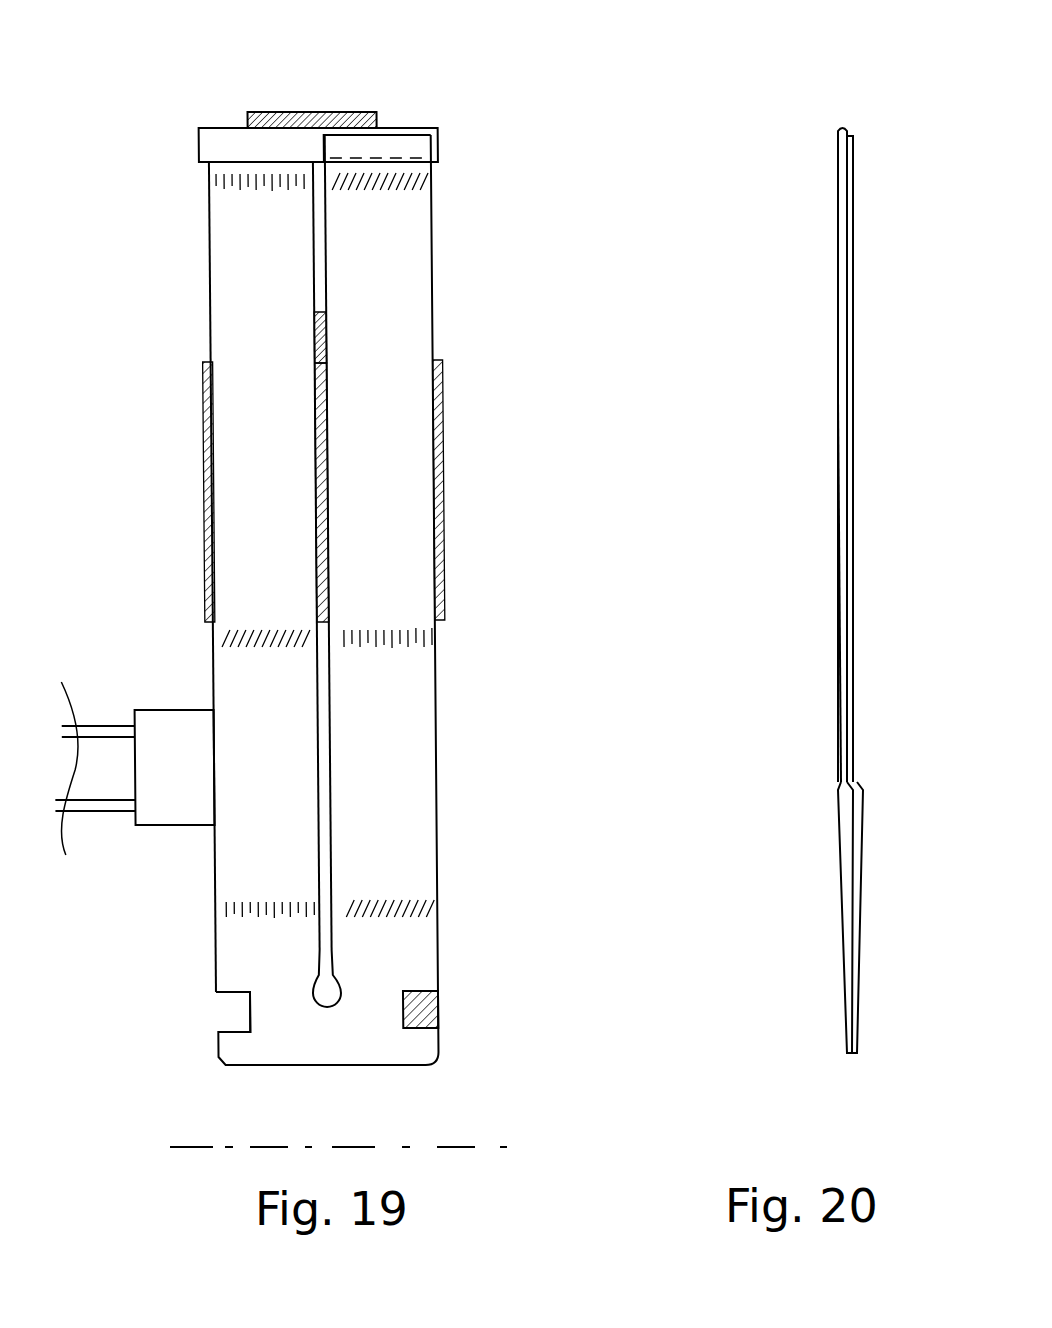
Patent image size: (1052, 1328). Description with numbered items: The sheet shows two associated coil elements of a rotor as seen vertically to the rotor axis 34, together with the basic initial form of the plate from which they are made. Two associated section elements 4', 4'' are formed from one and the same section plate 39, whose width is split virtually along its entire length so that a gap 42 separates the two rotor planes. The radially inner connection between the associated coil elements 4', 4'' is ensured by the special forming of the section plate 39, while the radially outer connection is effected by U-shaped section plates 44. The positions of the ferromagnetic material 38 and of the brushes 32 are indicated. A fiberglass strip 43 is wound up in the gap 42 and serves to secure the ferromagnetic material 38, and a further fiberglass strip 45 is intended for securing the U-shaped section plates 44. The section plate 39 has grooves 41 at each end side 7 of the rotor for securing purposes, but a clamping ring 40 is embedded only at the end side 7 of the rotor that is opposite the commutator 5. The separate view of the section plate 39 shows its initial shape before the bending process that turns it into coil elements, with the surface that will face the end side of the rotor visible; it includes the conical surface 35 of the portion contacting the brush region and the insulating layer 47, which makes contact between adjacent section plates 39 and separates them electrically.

In FIG. 19, the end side 7 is at (157, 238).
In FIG. 19, the section element 4' is at (198, 577).
In FIG. 19, the section element 4'' is at (381, 600).
In FIG. 19, the commutator 5 is at (210, 702).
In FIG. 19, the brushes 32 is at (170, 827).
In FIG. 19, the rotor axis 34 is at (472, 1140).
In FIG. 20, the conical surface 35 is at (840, 823).
In FIG. 19, the ferromagnetic material 38 is at (309, 447).
In FIG. 19, the section plate 39 is at (447, 342).
In FIG. 20, the section plate 39 is at (840, 500).
In FIG. 19, the clamping ring 40 is at (442, 1025).
In FIG. 19, the grooves 41 is at (228, 1007).
In FIG. 19, the gap 42 is at (318, 172).
In FIG. 19, the fiberglass strip 43 is at (309, 342).
In FIG. 19, the U-shaped section plates 44 is at (437, 134).
In FIG. 19, the fiberglass strip 45 is at (345, 111).
In FIG. 20, the insulating layer 47 is at (855, 307).